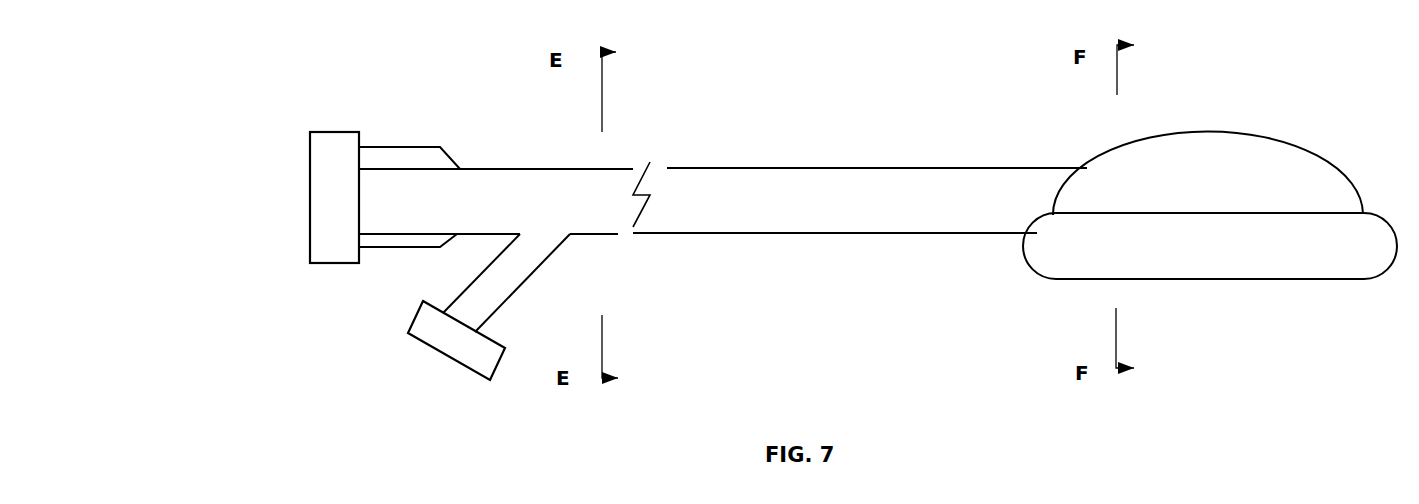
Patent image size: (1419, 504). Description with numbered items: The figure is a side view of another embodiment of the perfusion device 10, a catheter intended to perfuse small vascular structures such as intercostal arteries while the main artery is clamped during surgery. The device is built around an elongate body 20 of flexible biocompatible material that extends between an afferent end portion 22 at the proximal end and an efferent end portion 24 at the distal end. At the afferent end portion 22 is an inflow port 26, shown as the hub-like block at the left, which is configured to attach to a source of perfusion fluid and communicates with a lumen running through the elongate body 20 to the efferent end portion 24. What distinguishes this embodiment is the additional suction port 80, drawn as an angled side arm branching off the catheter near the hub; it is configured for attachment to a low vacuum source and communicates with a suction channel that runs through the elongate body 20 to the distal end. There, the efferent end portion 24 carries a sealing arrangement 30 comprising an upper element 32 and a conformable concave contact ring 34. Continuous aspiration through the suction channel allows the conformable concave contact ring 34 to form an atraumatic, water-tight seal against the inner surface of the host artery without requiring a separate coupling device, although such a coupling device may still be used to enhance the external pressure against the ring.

The perfusion device 10 is at (734, 121).
The elongate body 20 is at (856, 178).
The afferent end portion 22 is at (387, 188).
The efferent end portion 24 is at (1015, 182).
The inflow port 26 is at (327, 188).
The balloon assembly 30 is at (1280, 118).
The upper balloon 32 is at (1318, 182).
The conformable concave contact ring 34 is at (1258, 260).
The suction port 80 is at (450, 328).